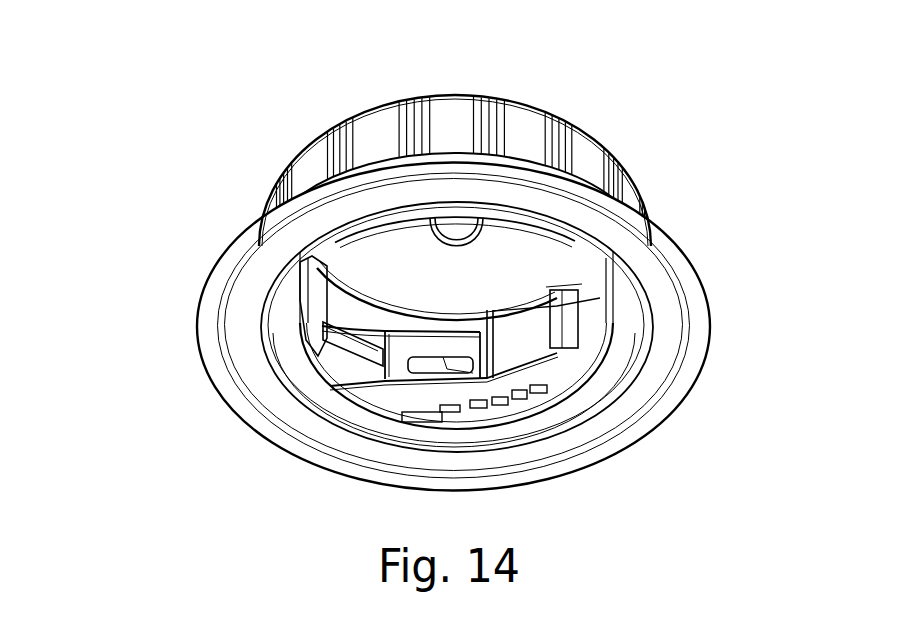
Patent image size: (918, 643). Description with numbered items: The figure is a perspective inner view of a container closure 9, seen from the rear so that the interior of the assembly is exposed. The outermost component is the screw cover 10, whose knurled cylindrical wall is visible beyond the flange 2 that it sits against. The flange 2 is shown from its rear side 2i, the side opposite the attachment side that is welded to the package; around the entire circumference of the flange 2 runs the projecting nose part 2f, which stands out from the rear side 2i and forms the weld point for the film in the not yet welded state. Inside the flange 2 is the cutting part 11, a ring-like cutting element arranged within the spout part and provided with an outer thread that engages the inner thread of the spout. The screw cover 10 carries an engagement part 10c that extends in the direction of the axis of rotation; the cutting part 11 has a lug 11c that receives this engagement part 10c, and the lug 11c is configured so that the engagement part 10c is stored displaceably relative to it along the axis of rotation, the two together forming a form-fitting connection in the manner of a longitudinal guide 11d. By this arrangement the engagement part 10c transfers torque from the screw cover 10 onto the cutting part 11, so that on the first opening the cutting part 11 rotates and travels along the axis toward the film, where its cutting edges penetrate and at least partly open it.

The container closure 9 is at (612, 98).
The screw cover 10 is at (528, 134).
The engagement part 10c is at (578, 278).
The flange 2 is at (697, 350).
The nose part 2f is at (616, 440).
The rear side 2i is at (650, 380).
The cutting part 11 is at (393, 368).
The lug 11c is at (540, 327).
The longitudinal guide 11d is at (615, 390).